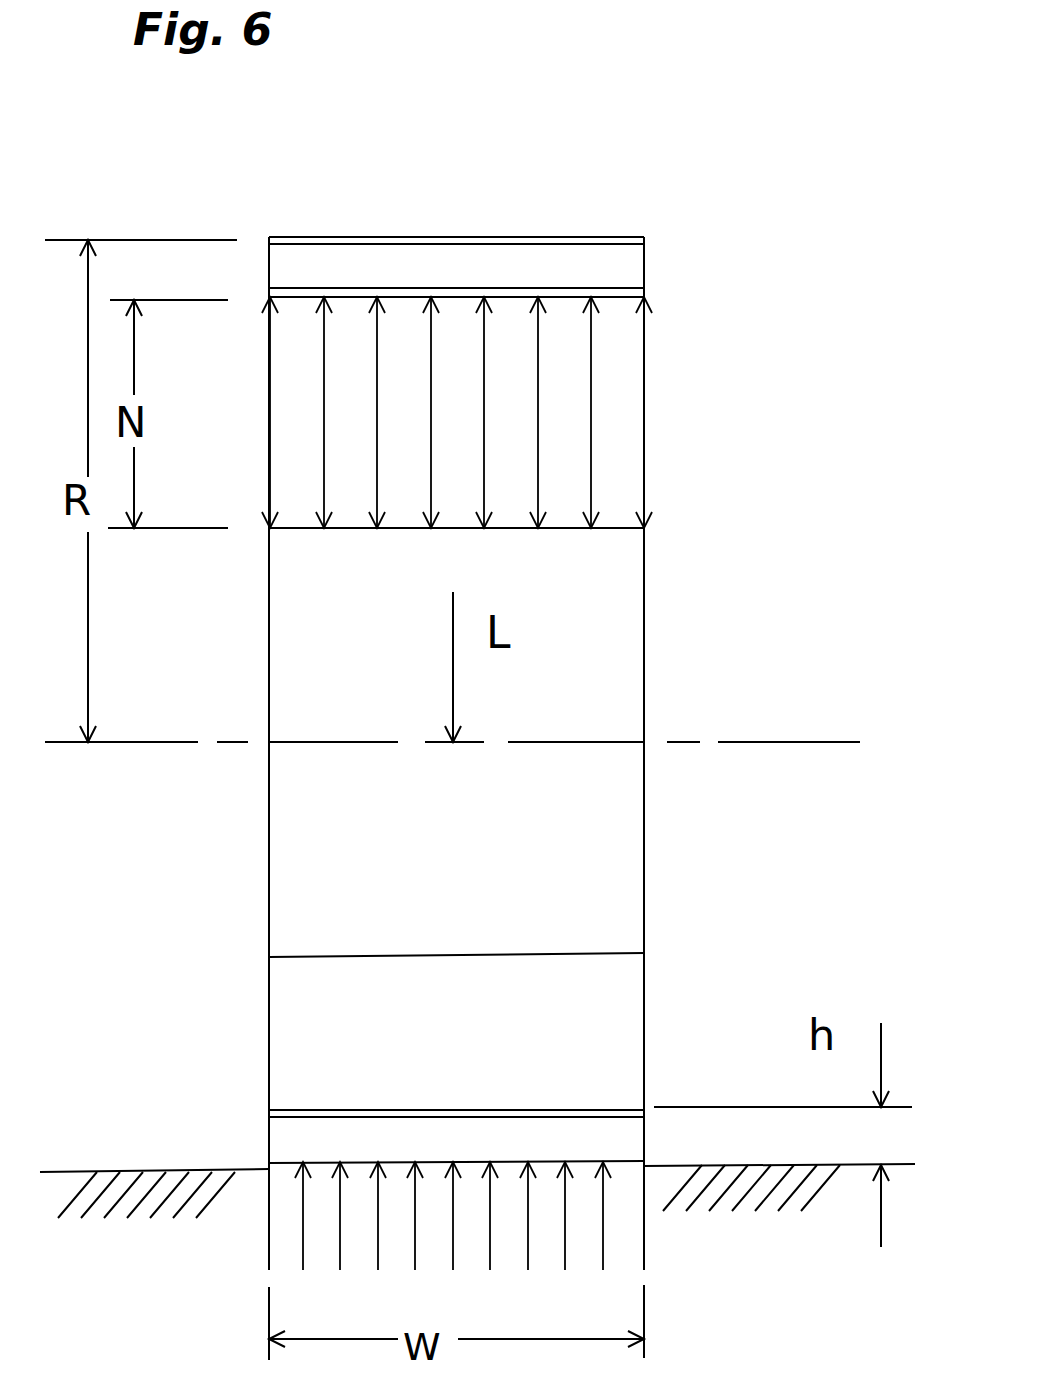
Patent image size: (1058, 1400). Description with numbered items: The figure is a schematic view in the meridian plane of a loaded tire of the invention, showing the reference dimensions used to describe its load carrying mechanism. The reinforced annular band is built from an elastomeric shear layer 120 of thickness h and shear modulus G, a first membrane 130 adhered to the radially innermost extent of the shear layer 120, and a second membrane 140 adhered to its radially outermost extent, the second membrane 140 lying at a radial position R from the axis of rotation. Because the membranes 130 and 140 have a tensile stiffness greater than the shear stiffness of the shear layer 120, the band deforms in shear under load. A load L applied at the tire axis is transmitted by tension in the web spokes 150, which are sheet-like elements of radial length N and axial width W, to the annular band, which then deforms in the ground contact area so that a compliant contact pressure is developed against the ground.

The elastomeric shear layer 120 is at (547, 263).
The first membrane 130 is at (605, 297).
The second membrane 140 is at (590, 238).
The web spokes 150 is at (646, 447).